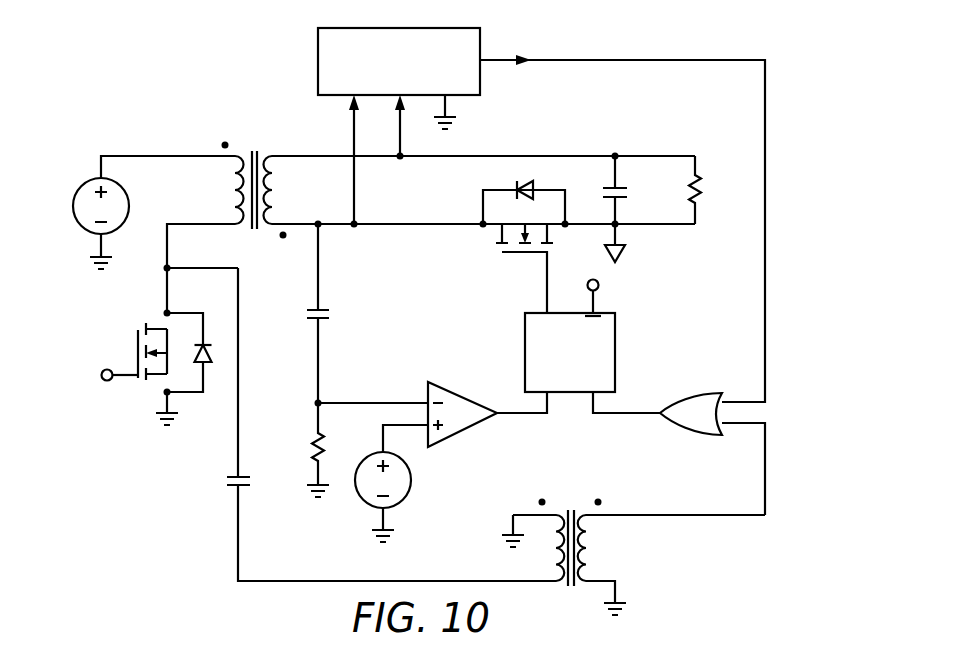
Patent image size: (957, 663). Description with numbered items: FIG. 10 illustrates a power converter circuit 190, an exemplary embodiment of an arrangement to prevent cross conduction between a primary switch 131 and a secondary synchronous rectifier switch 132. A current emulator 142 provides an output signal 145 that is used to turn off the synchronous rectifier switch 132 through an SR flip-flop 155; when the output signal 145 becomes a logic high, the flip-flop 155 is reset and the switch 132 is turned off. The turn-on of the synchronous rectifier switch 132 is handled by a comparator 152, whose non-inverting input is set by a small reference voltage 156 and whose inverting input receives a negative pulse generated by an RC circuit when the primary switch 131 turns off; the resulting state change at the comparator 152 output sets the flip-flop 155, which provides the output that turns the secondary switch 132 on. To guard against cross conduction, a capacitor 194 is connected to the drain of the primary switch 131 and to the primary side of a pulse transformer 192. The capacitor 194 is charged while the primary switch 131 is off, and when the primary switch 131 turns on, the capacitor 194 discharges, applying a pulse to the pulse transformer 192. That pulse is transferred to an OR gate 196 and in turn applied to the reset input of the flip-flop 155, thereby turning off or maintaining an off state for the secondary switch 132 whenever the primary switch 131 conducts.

The power converter circuit 190 is at (148, 66).
The current emulator 142 is at (317, 55).
The output signal 145 is at (625, 60).
The primary switch 131 is at (108, 345).
The synchronous rectifier switch 132 is at (507, 278).
The comparator 152 is at (461, 395).
The SR flip-flop 155 is at (615, 352).
The reference voltage 156 is at (411, 475).
The capacitor 194 is at (224, 482).
The pulse transformer 192 is at (590, 542).
The OR gate 196 is at (684, 437).